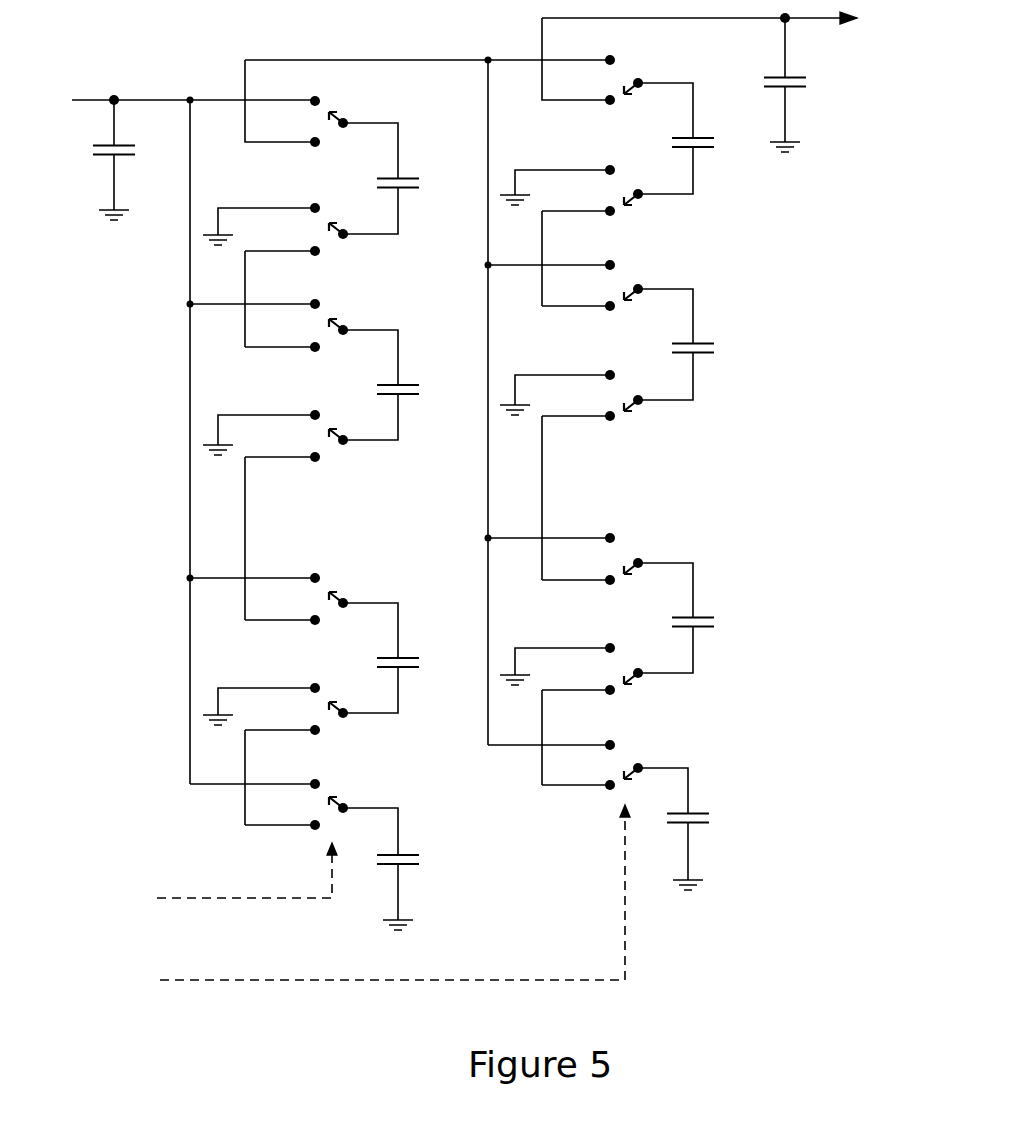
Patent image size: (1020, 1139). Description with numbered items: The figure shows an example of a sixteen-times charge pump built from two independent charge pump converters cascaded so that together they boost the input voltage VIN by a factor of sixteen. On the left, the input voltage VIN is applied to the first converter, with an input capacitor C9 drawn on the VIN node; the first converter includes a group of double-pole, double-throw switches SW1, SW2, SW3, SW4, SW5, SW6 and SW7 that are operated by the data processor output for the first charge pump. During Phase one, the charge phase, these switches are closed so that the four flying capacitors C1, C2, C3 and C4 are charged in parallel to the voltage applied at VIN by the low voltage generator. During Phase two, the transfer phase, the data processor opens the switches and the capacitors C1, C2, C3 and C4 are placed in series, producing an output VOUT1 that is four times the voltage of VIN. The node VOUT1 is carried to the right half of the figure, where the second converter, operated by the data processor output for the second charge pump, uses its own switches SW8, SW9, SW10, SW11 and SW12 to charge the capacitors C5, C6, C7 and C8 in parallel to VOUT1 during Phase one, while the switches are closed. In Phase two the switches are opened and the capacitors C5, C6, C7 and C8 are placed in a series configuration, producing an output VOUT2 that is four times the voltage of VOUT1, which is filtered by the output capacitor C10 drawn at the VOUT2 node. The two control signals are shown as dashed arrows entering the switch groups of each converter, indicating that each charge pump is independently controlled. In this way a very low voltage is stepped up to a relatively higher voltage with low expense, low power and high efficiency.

The input voltage VIN is at (176, 436).
The first charge pump output voltage VOUT1 is at (427, 385).
The second charge pump output voltage VOUT2 is at (735, 53).
The input capacitor C9 is at (127, 160).
The output capacitor C10 is at (804, 85).
The flying capacitor C1 is at (410, 184).
The flying capacitor C2 is at (410, 391).
The flying capacitor C3 is at (410, 664).
The flying capacitor C4 is at (410, 880).
The flying capacitor C5 is at (704, 142).
The flying capacitor C6 is at (704, 349).
The flying capacitor C7 is at (704, 622).
The flying capacitor C8 is at (701, 838).
The double-pole, double-throw switch SW1 is at (354, 134).
The double-pole, double-throw switch SW2 is at (354, 221).
The double-pole, double-throw switch SW3 is at (354, 339).
The double-pole, double-throw switch SW4 is at (354, 428).
The double-pole, double-throw switch SW5 is at (354, 613).
The double-pole, double-throw switch SW6 is at (354, 701).
The double-pole, double-throw switch SW7 is at (354, 814).
The double-pole, double-throw switch SW8 is at (649, 94).
The double-pole, double-throw switch SW9 is at (649, 181).
The double-pole, double-throw switch SW10 is at (652, 338).
The double-pole, double-throw switch SW11 is at (652, 611).
The double-pole, double-throw switch SW12 is at (652, 774).